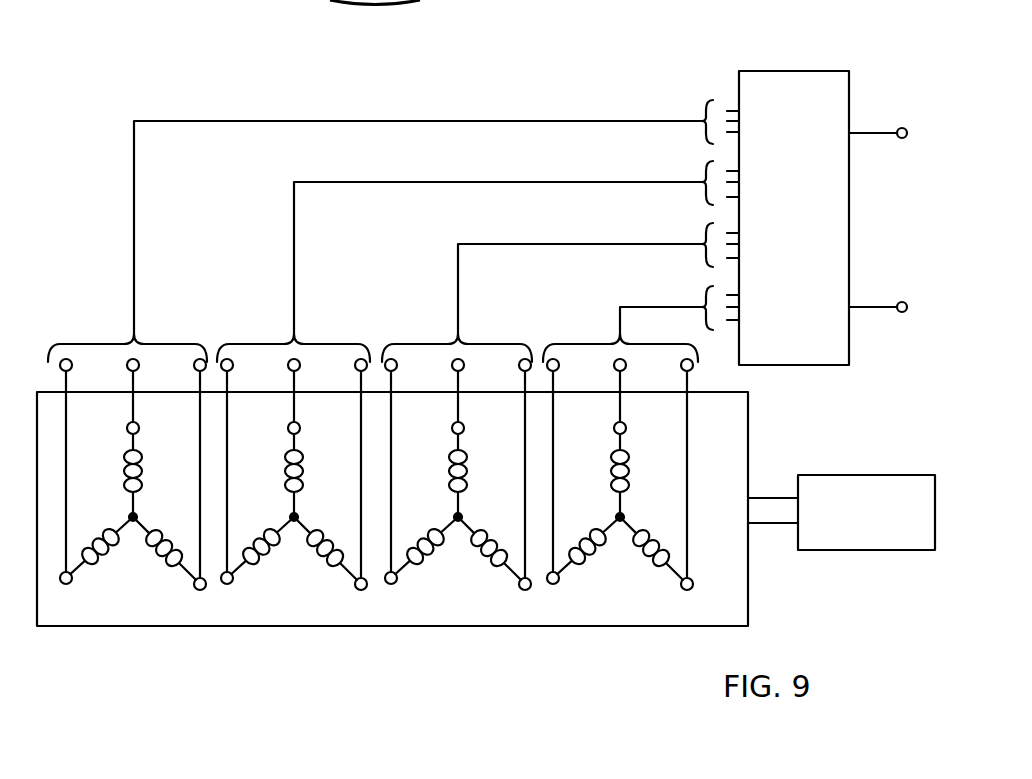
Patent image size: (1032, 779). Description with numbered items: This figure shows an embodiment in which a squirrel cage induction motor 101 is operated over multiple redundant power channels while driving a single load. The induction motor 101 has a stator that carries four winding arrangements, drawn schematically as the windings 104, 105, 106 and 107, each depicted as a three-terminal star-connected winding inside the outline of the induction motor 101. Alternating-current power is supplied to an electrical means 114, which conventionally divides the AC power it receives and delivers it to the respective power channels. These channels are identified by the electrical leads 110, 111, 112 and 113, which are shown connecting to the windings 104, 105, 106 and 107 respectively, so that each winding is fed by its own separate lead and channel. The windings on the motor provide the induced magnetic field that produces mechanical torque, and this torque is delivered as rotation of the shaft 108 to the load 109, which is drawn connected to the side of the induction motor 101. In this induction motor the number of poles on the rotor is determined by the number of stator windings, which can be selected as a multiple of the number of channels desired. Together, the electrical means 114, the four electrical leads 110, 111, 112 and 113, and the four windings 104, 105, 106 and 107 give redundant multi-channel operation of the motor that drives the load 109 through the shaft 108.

The induction motor 101 is at (207, 627).
The winding 104 is at (121, 596).
The winding 105 is at (290, 597).
The winding 106 is at (461, 597).
The winding 107 is at (621, 599).
The shaft 108 is at (767, 527).
The load 109 is at (859, 551).
The electrical lead 110 is at (268, 119).
The electrical lead 111 is at (356, 181).
The electrical lead 112 is at (533, 243).
The electrical lead 113 is at (650, 306).
The electrical means 114 is at (769, 70).